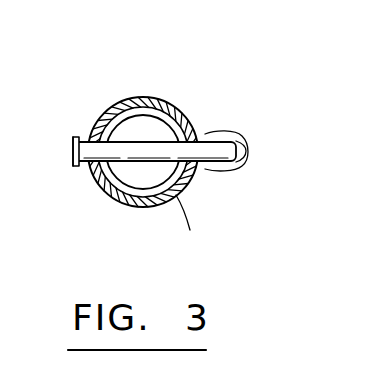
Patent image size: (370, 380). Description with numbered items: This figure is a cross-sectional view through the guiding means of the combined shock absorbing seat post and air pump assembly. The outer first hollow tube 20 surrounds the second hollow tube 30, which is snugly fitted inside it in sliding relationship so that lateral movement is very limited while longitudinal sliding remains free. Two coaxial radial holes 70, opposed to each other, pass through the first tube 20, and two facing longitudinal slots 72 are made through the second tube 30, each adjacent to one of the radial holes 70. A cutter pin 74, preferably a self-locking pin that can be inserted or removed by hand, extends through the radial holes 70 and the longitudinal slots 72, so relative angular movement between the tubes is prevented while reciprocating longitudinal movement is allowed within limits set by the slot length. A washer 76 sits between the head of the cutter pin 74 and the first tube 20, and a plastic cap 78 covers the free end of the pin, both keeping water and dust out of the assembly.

The first hollow tube 20 is at (161, 94).
The second hollow tube 30 is at (130, 94).
The radial holes 70 is at (198, 180).
The longitudinal slots 72 is at (193, 226).
The cutter pin 74 is at (75, 166).
The washer 76 is at (77, 136).
The plastic cap 78 is at (249, 150).